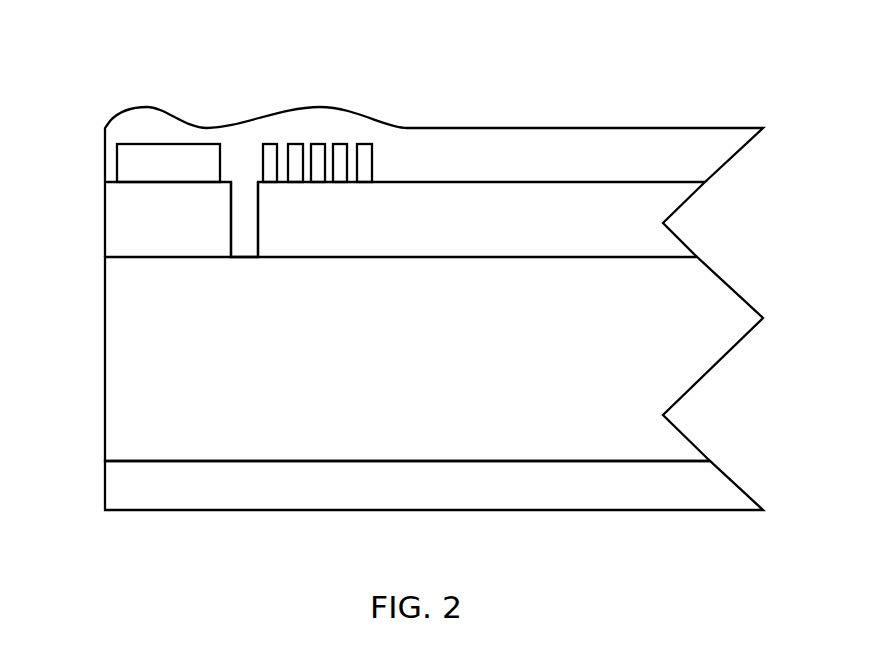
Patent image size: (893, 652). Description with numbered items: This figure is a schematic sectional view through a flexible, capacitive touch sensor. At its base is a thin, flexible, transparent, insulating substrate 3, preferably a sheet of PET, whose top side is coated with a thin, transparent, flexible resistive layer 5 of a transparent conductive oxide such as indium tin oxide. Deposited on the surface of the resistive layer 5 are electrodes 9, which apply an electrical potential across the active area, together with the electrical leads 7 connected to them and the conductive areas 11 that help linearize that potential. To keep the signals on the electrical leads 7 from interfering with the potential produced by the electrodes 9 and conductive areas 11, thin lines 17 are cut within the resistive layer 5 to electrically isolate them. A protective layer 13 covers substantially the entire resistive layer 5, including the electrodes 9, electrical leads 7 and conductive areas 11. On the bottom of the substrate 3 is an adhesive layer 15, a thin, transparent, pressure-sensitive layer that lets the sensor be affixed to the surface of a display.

The substrate 3 is at (105, 360).
The resistive layer 5 is at (105, 220).
The electrical leads 7 is at (168, 143).
The electrodes 9 is at (295, 143).
The conductive areas 11 is at (268, 143).
The protective layer 13 is at (105, 157).
The adhesive layer 15 is at (105, 485).
The lines 17 is at (243, 258).